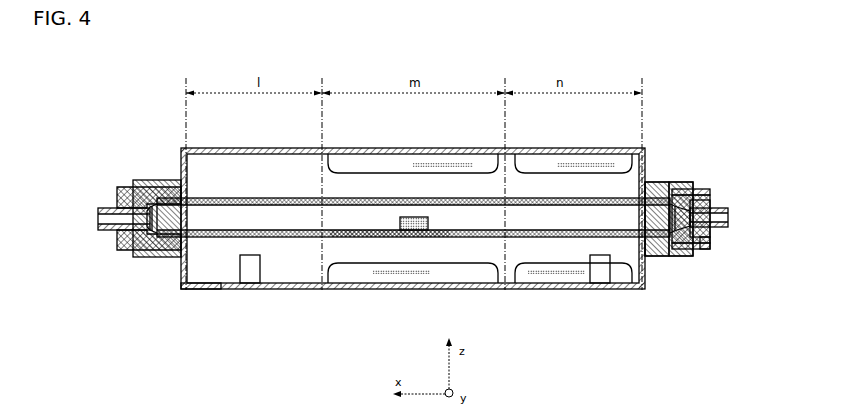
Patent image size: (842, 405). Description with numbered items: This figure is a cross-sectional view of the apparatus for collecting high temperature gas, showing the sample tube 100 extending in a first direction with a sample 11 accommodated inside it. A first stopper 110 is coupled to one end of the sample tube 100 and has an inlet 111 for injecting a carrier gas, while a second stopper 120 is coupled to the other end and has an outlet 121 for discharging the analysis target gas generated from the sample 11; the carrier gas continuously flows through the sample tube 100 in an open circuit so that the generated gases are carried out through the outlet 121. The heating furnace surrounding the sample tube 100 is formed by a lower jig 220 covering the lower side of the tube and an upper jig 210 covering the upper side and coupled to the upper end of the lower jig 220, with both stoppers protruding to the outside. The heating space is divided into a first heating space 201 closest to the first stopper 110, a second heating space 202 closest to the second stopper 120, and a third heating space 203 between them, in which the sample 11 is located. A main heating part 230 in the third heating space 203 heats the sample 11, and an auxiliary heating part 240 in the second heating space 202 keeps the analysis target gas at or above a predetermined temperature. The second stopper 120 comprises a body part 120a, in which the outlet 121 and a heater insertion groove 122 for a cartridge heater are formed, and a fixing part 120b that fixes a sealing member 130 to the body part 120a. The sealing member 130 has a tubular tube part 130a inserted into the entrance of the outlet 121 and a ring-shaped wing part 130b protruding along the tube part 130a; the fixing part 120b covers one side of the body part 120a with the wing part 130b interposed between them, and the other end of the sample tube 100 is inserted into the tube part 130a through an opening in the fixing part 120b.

The sample 11 is at (415, 233).
The sample tube 100 is at (357, 237).
The first stopper 110 is at (113, 190).
The inlet 111 is at (98, 218).
The second stopper 120 is at (738, 312).
The body part 120a is at (708, 255).
The fixing part 120b is at (680, 258).
The outlet 121 is at (730, 217).
The heater insertion groove 122 is at (710, 245).
The sealing member 130 is at (680, 328).
The tube part 130a is at (665, 258).
The wing part 130b is at (652, 258).
The first heating space 201 is at (246, 261).
The second heating space 202 is at (596, 259).
The third heating space 203 is at (461, 255).
The upper jig 210 is at (647, 173).
The lower jig 220 is at (207, 289).
The main heating part 230 is at (333, 266).
The auxiliary heating part 240 is at (537, 289).